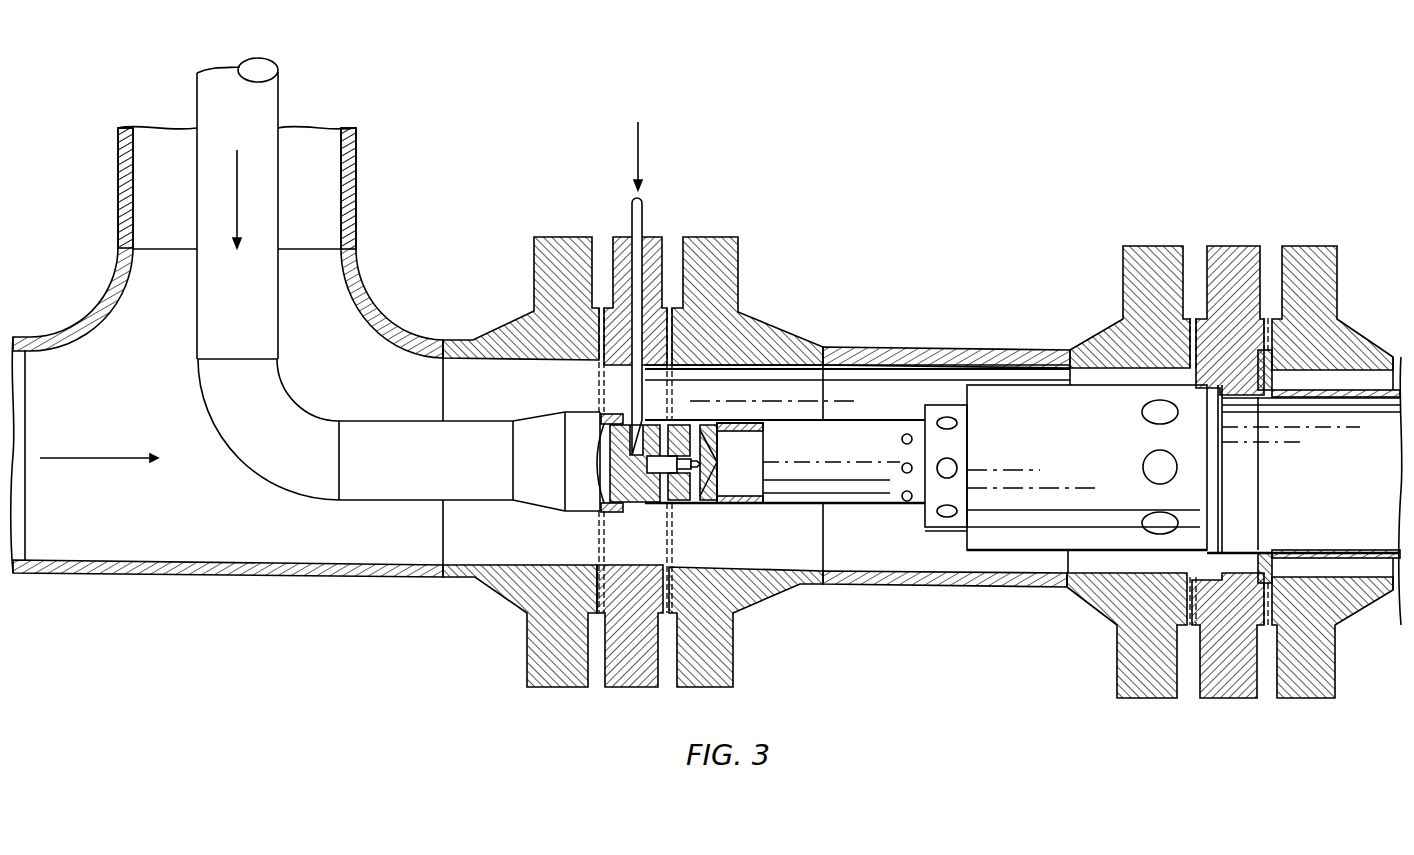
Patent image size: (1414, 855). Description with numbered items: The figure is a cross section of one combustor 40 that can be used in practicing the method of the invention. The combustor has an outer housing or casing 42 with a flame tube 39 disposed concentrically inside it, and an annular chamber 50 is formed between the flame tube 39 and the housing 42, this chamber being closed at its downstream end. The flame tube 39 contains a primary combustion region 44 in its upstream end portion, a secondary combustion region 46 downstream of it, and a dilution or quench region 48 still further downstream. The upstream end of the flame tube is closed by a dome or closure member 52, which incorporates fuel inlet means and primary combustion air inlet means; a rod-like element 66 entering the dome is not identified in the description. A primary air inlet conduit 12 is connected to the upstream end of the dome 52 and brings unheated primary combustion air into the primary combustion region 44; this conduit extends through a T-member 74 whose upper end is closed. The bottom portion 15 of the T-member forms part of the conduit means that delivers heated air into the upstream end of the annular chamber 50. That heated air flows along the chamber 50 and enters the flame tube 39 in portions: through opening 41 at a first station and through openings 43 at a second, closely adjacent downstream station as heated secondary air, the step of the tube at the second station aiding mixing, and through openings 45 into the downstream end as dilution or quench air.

The primary air inlet conduit 12 is at (365, 421).
The bottom portion of T-member 15 is at (140, 502).
The flame tube 39 is at (735, 505).
The combustor 40 is at (866, 330).
The opening 41 is at (908, 502).
The outer housing or casing 42 is at (965, 347).
The opening 43 is at (946, 517).
The primary combustion region 44 is at (735, 452).
The opening 45 is at (1152, 519).
The secondary combustion region 46 is at (975, 400).
The dilution or quench region 48 is at (1122, 469).
The annular chamber 50 is at (784, 544).
The dome or closure member 52 is at (653, 517).
The rod 66 is at (644, 213).
The T-member 74 is at (357, 218).